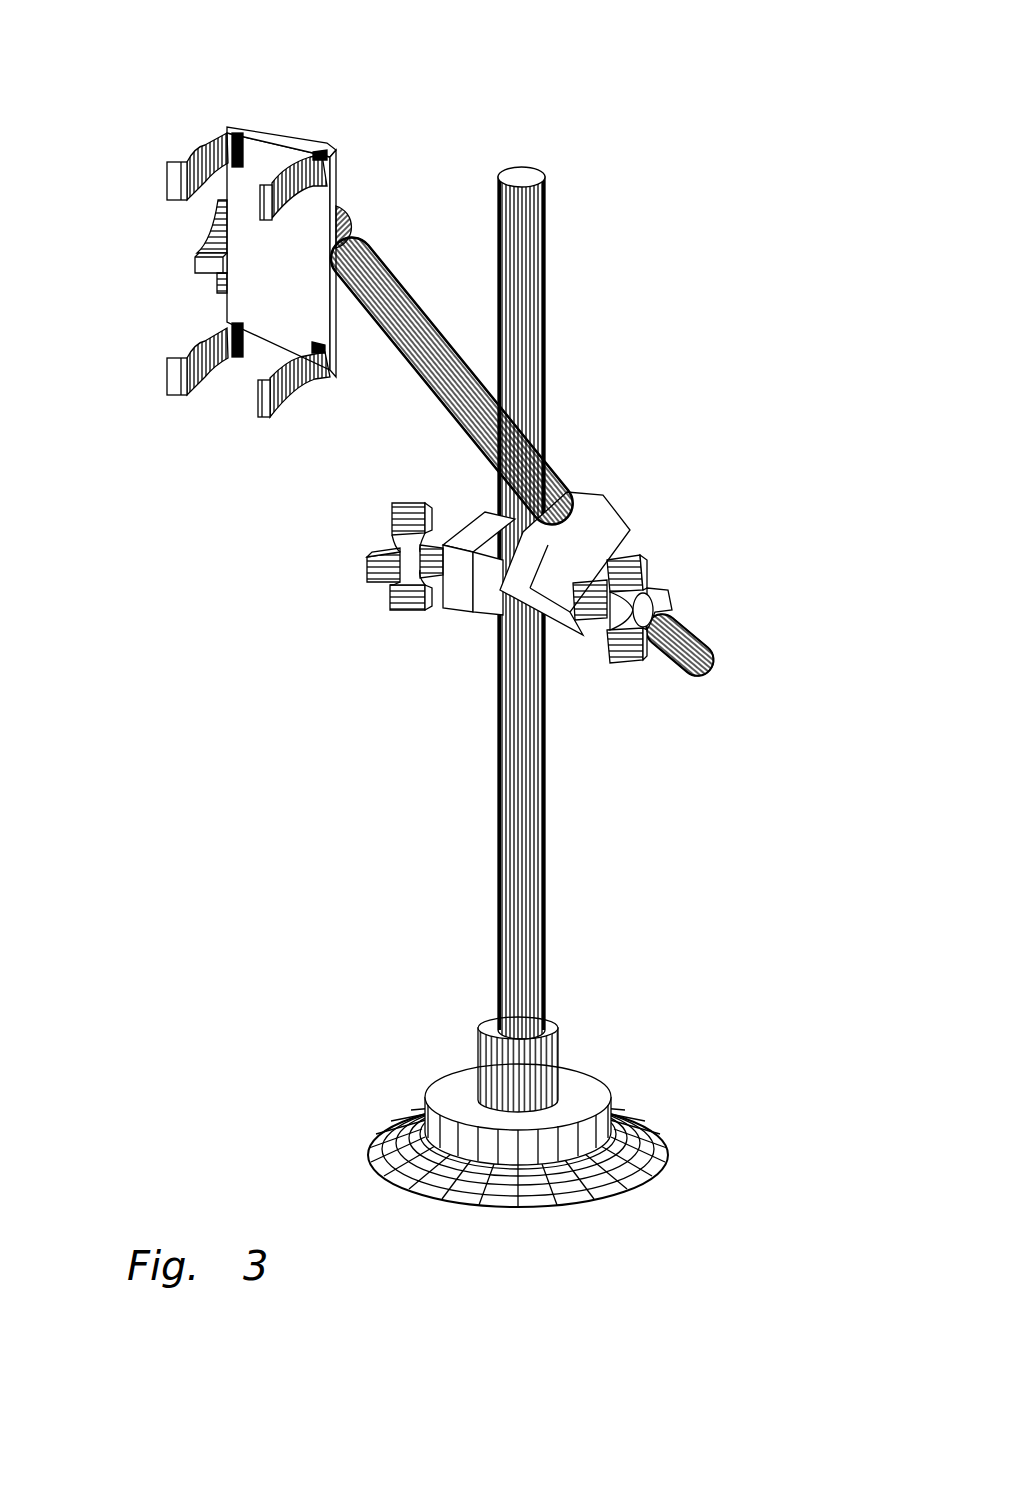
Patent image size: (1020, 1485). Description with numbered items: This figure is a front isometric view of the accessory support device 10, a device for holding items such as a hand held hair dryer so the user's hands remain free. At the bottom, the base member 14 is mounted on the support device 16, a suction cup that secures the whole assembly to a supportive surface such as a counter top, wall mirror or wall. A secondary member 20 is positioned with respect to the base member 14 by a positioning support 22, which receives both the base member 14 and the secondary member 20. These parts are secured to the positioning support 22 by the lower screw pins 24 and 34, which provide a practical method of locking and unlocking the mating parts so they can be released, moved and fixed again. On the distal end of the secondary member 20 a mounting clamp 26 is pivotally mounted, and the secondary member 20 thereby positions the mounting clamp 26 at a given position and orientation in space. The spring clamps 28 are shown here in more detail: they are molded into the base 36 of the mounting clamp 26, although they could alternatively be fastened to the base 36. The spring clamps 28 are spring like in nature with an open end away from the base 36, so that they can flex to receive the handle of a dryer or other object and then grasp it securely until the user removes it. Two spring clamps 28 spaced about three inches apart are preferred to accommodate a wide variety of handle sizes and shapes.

The accessory support device 10 is at (439, 620).
The base member 14 is at (543, 798).
The support device 16 is at (455, 1063).
The secondary member 20 is at (400, 297).
The positioning support 22 is at (520, 539).
The lower screw pins 24 is at (669, 597).
The mounting clamp 26 is at (284, 278).
The spring clamps 28 is at (280, 172).
The lower screw pin 34 is at (368, 563).
The base of the mounting clamp 36 is at (220, 307).